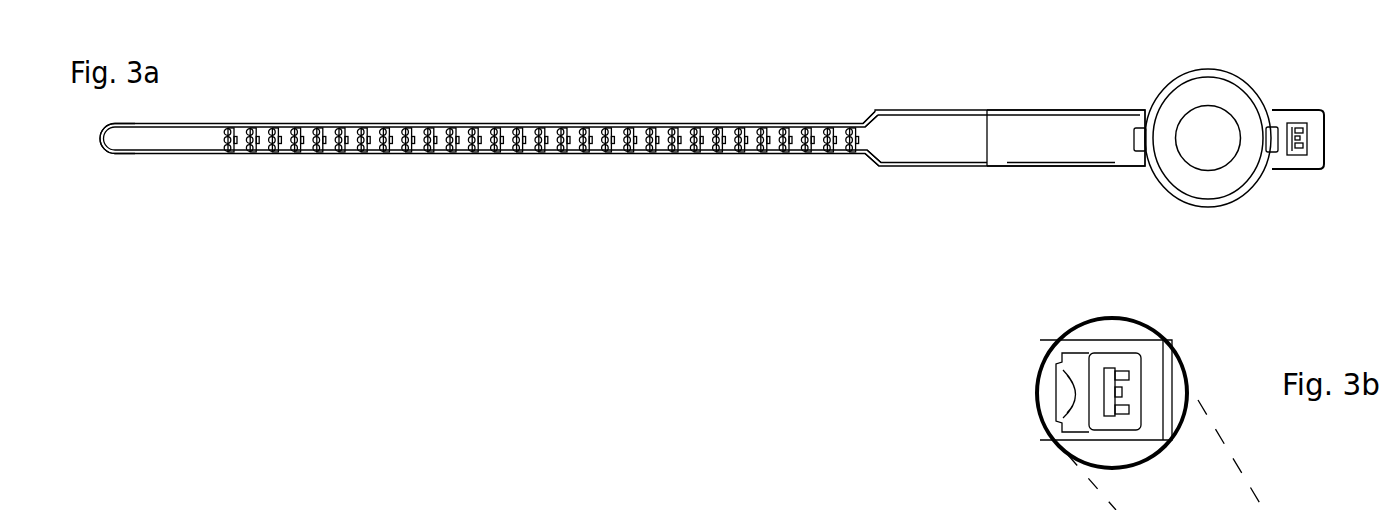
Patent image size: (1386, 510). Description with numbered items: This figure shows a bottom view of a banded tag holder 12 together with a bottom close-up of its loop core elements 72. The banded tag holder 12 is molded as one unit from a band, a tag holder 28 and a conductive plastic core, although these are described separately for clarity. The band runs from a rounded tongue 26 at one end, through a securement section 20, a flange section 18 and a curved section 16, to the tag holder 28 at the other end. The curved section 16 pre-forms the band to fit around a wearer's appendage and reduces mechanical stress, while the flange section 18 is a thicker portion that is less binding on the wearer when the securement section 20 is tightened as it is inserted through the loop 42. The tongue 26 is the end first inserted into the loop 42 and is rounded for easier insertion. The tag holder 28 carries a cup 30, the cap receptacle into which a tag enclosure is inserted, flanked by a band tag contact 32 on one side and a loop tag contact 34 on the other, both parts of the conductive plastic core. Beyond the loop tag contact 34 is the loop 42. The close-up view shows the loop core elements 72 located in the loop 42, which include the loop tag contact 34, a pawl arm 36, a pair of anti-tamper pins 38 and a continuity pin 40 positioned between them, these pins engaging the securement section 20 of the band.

In FIG. 3A, the banded tag holder 12 is at (684, 103).
In FIG. 3A, the curved section 16 is at (1035, 168).
In FIG. 3A, the flange section 18 is at (897, 169).
In FIG. 3A, the securement section 20 is at (545, 159).
In FIG. 3A, the tongue 26 is at (171, 160).
In FIG. 3A, the tag holder 28 is at (1175, 206).
In FIG. 3A, the cup 30 is at (1200, 183).
In FIG. 3A, the band tag contact 32 is at (1137, 159).
In FIG. 3A, the loop tag contact 34 is at (1274, 157).
In FIG. 3B, the loop tag contact 34 is at (1059, 396).
In FIG. 3B, the pawl arm 36 is at (1100, 410).
In FIG. 3B, the anti-tamper pins 38 is at (1132, 377).
In FIG. 3B, the continuity pin 40 is at (1125, 393).
In FIG. 3A, the loop 42 is at (1312, 171).
In FIG. 3B, the loop core 72 is at (1110, 343).